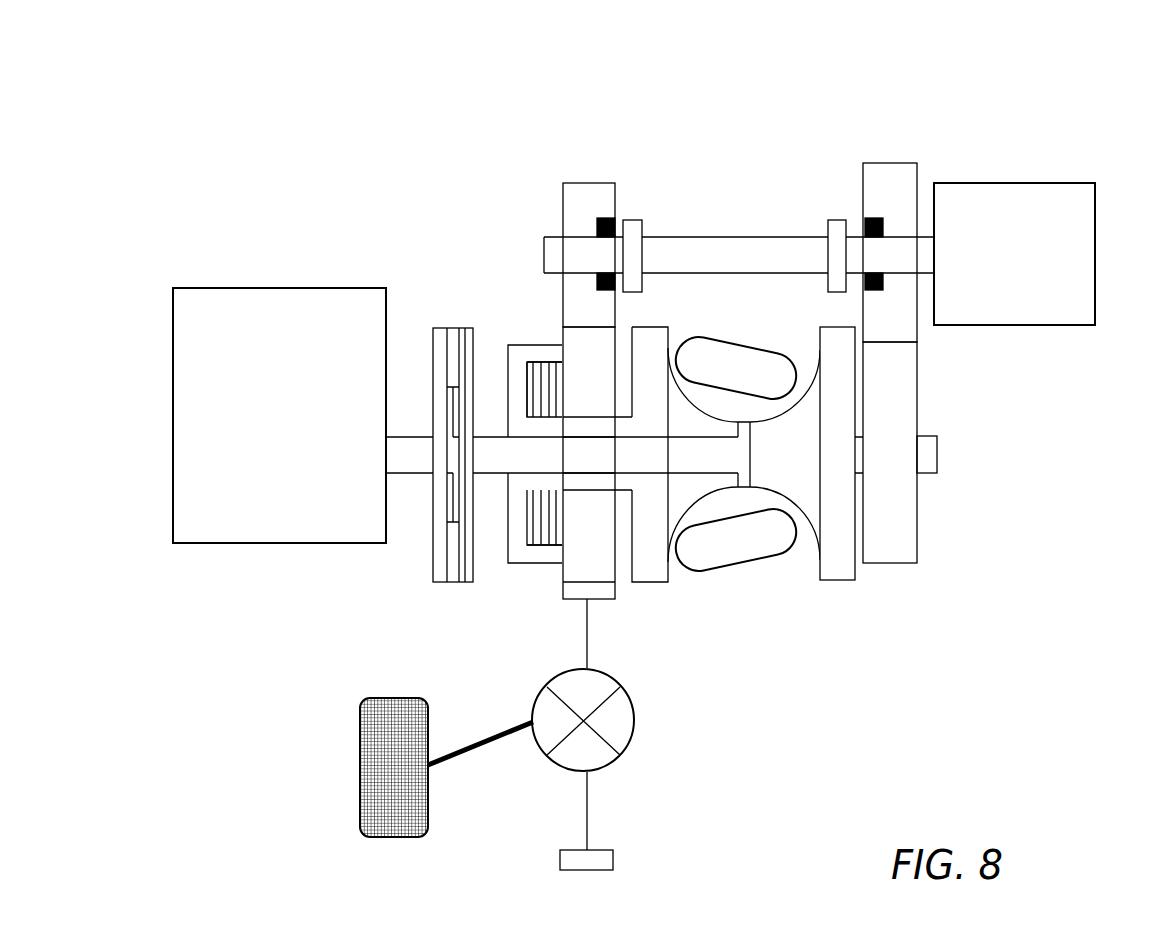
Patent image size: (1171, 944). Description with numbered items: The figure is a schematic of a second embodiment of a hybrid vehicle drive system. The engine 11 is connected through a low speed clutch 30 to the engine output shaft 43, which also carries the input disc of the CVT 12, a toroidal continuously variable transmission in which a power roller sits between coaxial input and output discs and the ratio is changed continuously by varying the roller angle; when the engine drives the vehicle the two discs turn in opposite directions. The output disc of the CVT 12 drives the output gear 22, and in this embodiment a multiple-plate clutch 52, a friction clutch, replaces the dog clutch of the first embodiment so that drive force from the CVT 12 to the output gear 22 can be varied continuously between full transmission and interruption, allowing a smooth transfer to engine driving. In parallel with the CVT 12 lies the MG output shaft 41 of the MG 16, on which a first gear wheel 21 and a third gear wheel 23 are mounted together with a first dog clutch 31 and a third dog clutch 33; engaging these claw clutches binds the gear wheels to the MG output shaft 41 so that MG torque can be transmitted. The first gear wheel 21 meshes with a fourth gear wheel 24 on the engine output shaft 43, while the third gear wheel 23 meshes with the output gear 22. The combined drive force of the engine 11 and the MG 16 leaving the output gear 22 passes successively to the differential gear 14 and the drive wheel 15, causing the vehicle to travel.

The engine 11 is at (205, 528).
The CVT 12 is at (845, 595).
The differential gear 14 is at (547, 733).
The drive wheel 15 is at (365, 832).
The MG 16 is at (1064, 307).
The first gear wheel 21 is at (880, 173).
The output gear 22 is at (580, 563).
The third gear wheel 23 is at (588, 193).
The fourth gear wheel 24 is at (898, 542).
The low speed clutch 30 is at (443, 333).
The first dog clutch 31 is at (830, 218).
The third dog clutch 33 is at (633, 220).
The MG output shaft 41 is at (742, 240).
The engine output shaft 43 is at (937, 452).
The multiple-plate clutch 52 is at (518, 362).